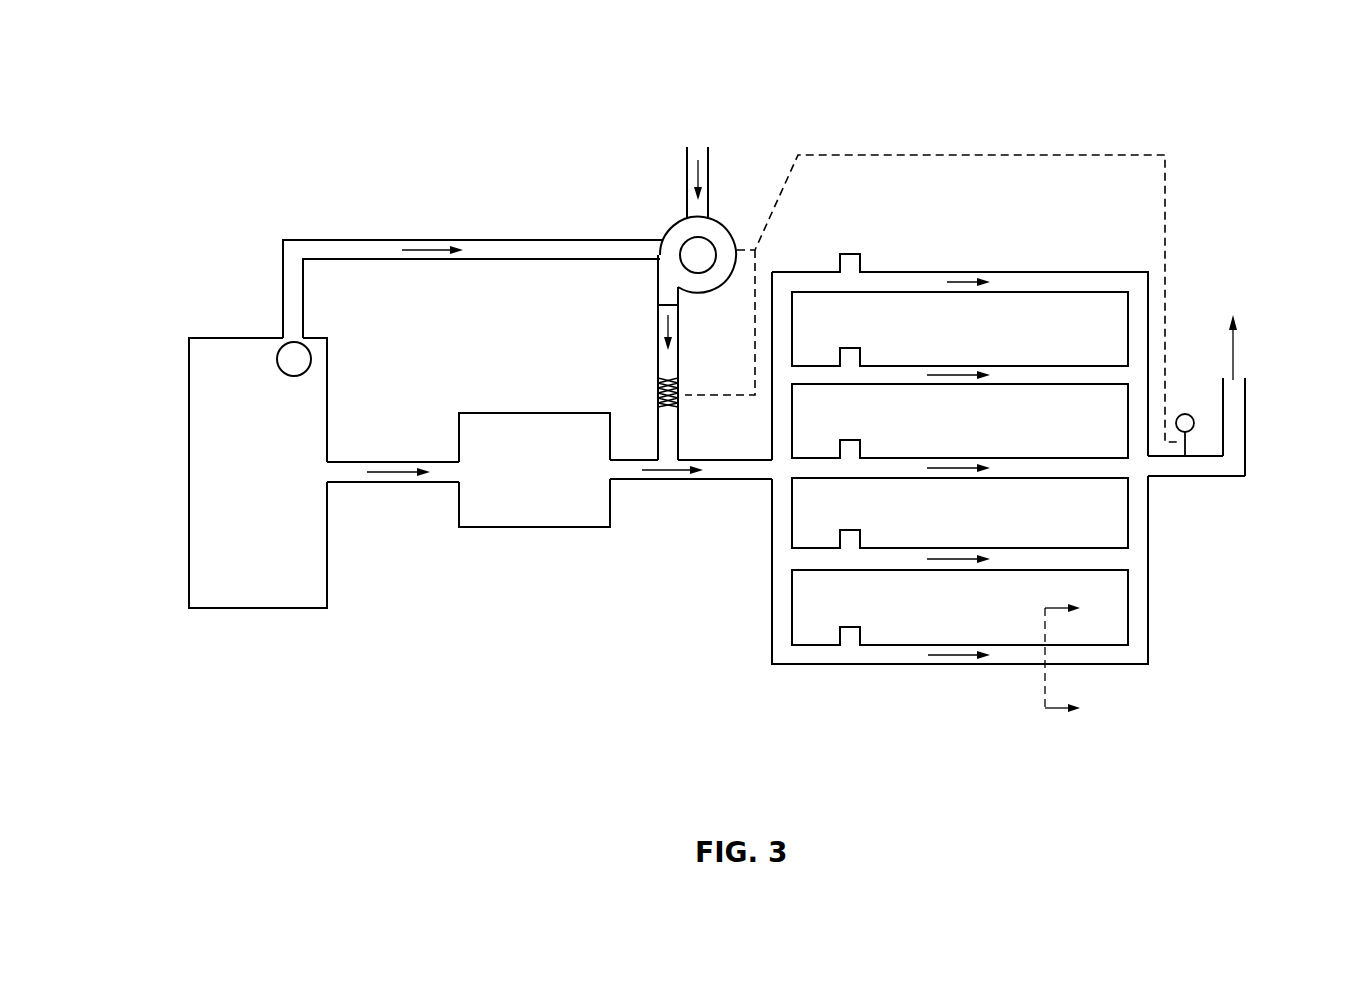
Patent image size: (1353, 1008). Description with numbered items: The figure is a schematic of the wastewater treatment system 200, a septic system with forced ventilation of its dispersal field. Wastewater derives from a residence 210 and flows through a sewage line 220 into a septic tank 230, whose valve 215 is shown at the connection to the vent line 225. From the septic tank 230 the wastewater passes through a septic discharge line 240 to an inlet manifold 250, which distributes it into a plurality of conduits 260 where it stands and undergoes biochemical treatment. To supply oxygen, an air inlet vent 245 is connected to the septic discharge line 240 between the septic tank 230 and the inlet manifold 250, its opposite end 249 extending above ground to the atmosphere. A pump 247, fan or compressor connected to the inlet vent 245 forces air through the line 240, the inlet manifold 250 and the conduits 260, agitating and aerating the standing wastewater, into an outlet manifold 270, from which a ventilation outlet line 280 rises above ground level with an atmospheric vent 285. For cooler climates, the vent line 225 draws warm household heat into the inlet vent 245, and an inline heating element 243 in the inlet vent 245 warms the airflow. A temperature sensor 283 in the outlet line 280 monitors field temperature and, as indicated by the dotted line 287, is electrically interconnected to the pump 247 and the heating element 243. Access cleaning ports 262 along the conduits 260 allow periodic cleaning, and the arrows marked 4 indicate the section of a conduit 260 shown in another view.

The wastewater treatment system 200 is at (262, 153).
The residence 210 is at (190, 460).
The valve 215 is at (278, 370).
The sewage line 220 is at (383, 485).
The vent line 225 is at (487, 239).
The septic tank 230 is at (515, 528).
The septic discharge line 240 is at (678, 480).
The inline heating element 243 is at (660, 397).
The air inlet vent 245 is at (680, 363).
The pump 247 is at (712, 217).
The opposite end 249 is at (687, 168).
The inlet manifold 250 is at (773, 607).
The conduits 260 is at (975, 273).
The access cleaning ports 262 is at (845, 255).
The outlet manifold 270 is at (1148, 603).
The ventilation outlet line 280 is at (1222, 475).
The temperature sensor 283 is at (1187, 414).
The atmospheric vent 285 is at (1245, 383).
The dotted line 287 is at (965, 155).
The section line 4- 4 is at (1074, 660).